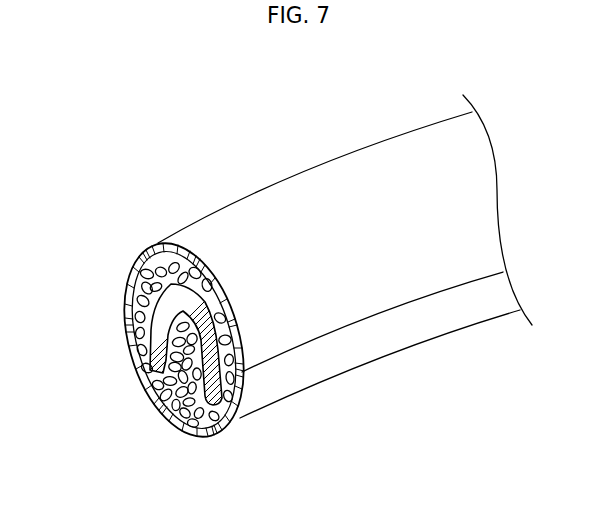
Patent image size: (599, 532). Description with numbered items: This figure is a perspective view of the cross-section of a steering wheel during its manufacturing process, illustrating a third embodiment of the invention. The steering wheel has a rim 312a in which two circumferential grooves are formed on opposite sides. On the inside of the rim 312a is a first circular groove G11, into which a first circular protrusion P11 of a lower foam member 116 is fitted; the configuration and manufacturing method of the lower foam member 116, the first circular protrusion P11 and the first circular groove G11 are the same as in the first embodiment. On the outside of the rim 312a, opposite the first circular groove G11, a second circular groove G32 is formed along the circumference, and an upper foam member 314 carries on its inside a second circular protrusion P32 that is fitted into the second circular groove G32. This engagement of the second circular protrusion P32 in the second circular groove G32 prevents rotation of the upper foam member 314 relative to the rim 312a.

The lower foam member 116 is at (206, 436).
The upper foam member 314 is at (158, 243).
The second circular groove G32 is at (138, 262).
The second circular protrusion P32 is at (185, 292).
The first circular protrusion P11 is at (130, 358).
The first circular groove G11 is at (158, 397).
The rim 312a is at (238, 406).